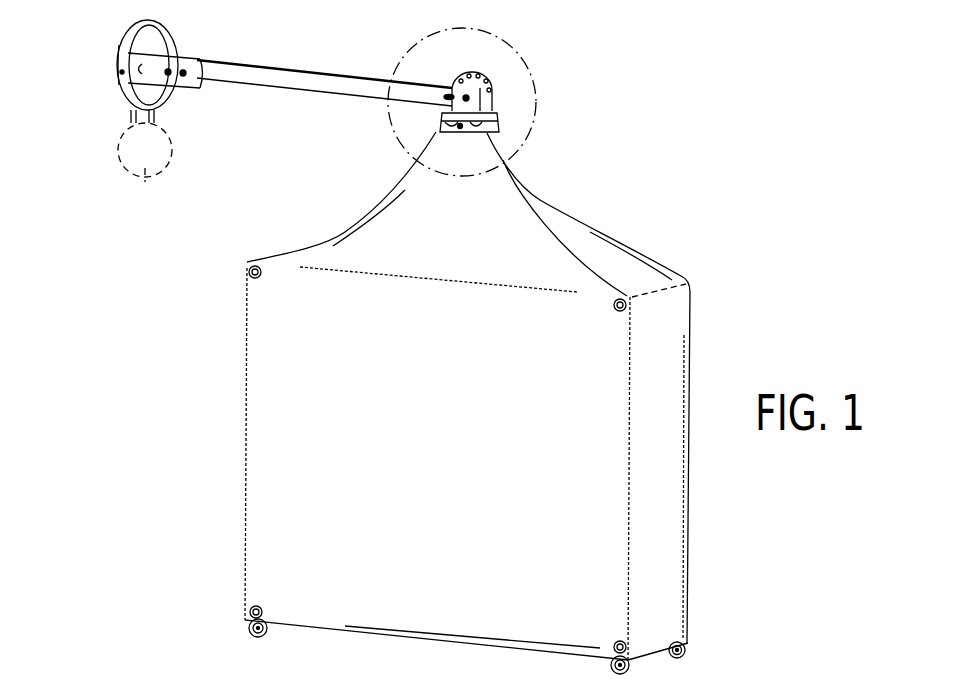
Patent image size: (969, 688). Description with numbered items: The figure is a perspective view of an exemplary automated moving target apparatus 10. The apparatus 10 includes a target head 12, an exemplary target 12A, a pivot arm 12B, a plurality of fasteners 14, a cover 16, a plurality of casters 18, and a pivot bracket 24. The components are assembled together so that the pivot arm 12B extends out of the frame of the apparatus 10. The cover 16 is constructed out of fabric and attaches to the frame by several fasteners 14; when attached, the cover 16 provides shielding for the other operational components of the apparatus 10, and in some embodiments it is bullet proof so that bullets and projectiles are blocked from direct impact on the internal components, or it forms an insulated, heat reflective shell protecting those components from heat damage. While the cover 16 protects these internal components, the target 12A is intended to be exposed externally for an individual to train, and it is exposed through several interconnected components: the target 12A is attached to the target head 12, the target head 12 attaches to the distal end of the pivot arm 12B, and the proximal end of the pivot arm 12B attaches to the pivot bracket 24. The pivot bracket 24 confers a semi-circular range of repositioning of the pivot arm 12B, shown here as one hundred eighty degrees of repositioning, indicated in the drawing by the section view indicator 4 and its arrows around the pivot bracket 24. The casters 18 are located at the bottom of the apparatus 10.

The automated moving target apparatus 10 is at (742, 80).
The target head 12 is at (116, 42).
The target 12A is at (140, 185).
The pivot arm 12B is at (313, 83).
The section view indicator 4 is at (506, 38).
The pivot bracket 24 is at (490, 90).
The cover 16 is at (338, 403).
The fasteners 14 is at (250, 273).
The casters 18 is at (258, 638).